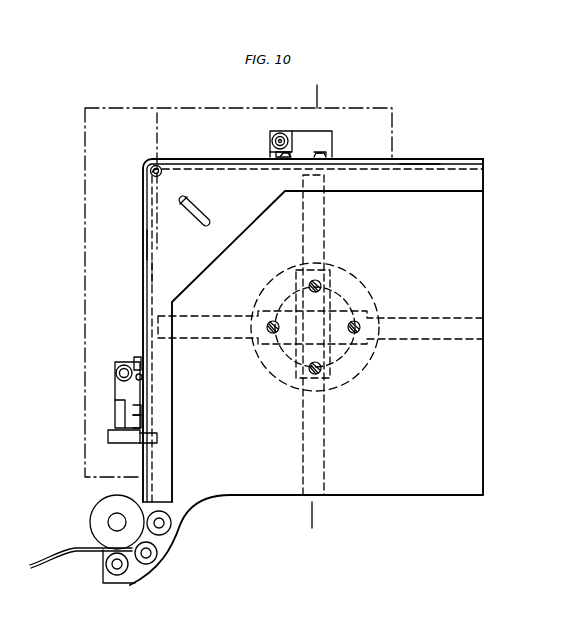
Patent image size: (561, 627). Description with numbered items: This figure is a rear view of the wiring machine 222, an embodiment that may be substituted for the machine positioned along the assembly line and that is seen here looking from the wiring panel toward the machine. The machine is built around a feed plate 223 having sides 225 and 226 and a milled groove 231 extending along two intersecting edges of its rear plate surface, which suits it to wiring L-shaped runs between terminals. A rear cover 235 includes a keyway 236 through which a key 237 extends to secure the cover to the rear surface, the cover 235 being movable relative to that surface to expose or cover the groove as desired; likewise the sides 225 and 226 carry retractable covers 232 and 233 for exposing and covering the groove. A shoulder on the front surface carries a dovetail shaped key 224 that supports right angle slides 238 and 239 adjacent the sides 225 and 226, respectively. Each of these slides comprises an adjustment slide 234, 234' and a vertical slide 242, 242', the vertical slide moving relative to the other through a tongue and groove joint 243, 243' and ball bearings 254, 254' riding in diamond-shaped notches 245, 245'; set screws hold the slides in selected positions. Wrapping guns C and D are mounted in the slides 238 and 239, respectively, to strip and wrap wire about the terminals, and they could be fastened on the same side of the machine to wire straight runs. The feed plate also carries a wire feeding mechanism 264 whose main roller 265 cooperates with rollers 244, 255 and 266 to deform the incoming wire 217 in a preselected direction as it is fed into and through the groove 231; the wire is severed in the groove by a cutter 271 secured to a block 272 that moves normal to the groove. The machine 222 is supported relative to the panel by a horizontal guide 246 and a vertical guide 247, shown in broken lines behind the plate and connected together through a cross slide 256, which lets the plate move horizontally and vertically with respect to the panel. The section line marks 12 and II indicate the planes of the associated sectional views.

The section line 12 is at (166, 116).
The section line II is at (326, 91).
The sheet 217 is at (63, 547).
The wiring machine 222 is at (449, 455).
The feed plate 223 is at (230, 163).
The dovetail shaped key 224 is at (484, 394).
The side 225 is at (148, 247).
The side 226 is at (428, 144).
The milled groove 231 is at (143, 214).
The retractable cover 232 is at (151, 276).
The retractable cover 233 is at (436, 160).
The adjustment slide 234 is at (174, 423).
The adjustment slide 234' is at (352, 150).
The rear cover 235 is at (158, 495).
The keyway 236 is at (185, 199).
The key 237 is at (197, 212).
The right angle slide 238 is at (115, 398).
The right angle slide 239 is at (342, 126).
The vertical slide 242 is at (104, 414).
The vertical slide 242' is at (363, 120).
The tongue and groove joint 243 is at (172, 355).
The tongue and groove joint 243' is at (271, 171).
The cooperating roller 244 is at (116, 575).
The diamond-shaped notch 245 is at (174, 403).
The diamond-shaped notch 245' is at (303, 148).
The horizontal guide 246 is at (426, 318).
The vertical guide 247 is at (325, 233).
The ball bearing 254 is at (175, 369).
The ball bearing 254' is at (353, 139).
The cooperating roller 255 is at (157, 554).
The cross slide 256 is at (345, 296).
The wire feeding mechanism 264 is at (188, 590).
The main roller 265 is at (105, 512).
The cooperating roller 266 is at (171, 523).
The cutter 271 is at (136, 445).
The block 272 is at (110, 438).
The wrapping gun C is at (282, 134).
The wrapping gun D is at (124, 365).